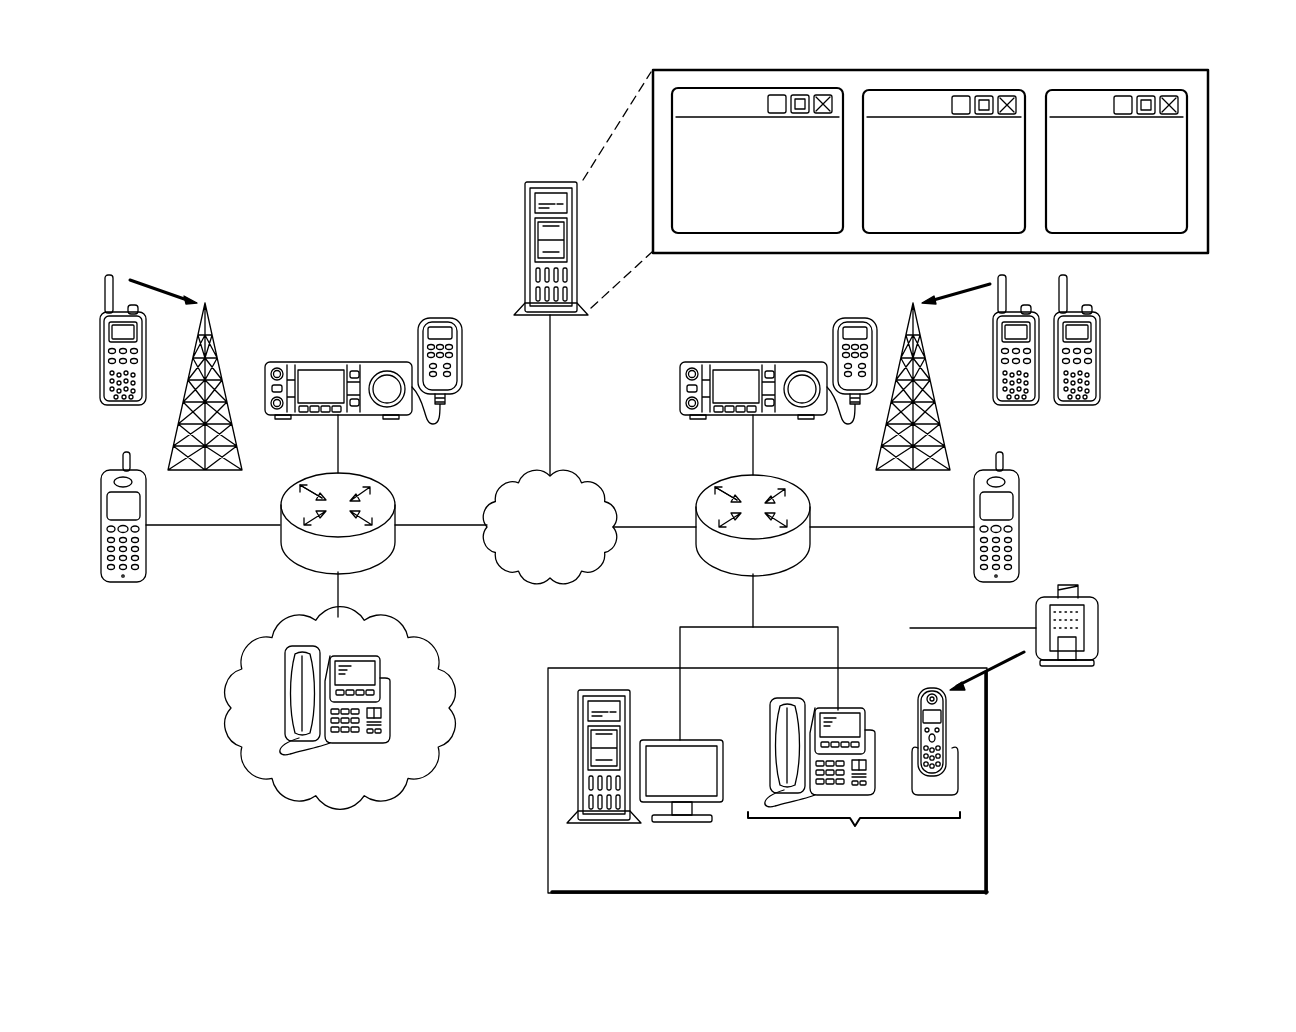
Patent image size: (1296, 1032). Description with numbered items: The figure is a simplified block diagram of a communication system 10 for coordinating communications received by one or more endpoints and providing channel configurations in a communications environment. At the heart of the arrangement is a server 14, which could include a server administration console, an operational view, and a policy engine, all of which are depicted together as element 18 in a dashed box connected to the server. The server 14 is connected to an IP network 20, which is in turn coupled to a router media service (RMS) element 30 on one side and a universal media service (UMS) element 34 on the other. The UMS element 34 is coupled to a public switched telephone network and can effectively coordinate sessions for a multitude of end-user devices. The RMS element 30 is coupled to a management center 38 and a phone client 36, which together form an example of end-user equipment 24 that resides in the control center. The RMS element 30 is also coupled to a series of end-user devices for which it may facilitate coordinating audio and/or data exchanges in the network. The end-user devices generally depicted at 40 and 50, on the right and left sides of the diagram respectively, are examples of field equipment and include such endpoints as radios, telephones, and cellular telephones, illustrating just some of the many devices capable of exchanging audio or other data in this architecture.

The communication system 10 is at (288, 160).
The server 14 is at (525, 258).
The server administration console, operational view, and policy engine 18 is at (1212, 159).
The IP network 20 is at (530, 588).
The end-user equipment 24 is at (736, 760).
The router media service (RMS) element 30 is at (810, 538).
The universal media service (UMS) element 34 is at (280, 537).
The phone client 36 is at (854, 783).
The management center 38 is at (702, 740).
The end-user devices 40 is at (1078, 457).
The end-user devices 50 is at (184, 617).